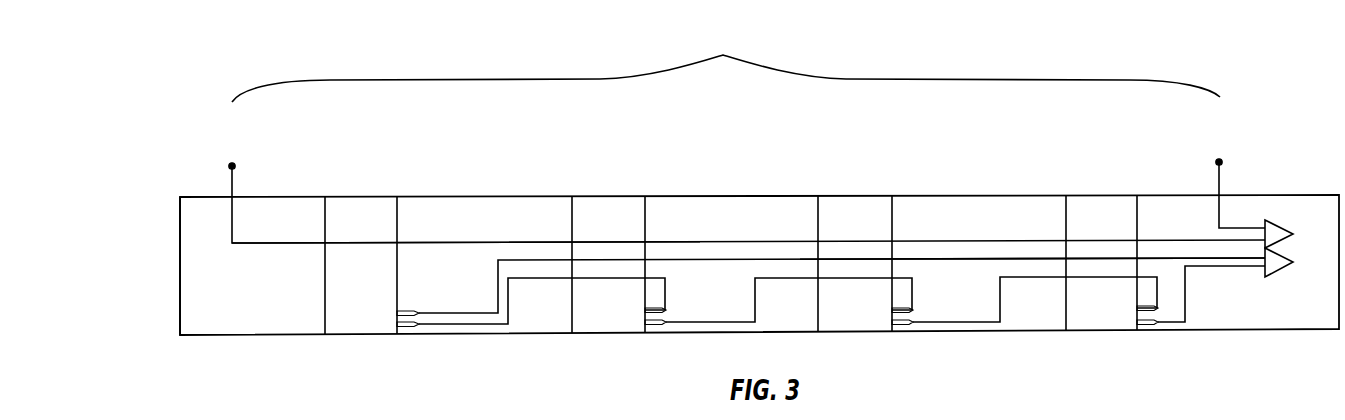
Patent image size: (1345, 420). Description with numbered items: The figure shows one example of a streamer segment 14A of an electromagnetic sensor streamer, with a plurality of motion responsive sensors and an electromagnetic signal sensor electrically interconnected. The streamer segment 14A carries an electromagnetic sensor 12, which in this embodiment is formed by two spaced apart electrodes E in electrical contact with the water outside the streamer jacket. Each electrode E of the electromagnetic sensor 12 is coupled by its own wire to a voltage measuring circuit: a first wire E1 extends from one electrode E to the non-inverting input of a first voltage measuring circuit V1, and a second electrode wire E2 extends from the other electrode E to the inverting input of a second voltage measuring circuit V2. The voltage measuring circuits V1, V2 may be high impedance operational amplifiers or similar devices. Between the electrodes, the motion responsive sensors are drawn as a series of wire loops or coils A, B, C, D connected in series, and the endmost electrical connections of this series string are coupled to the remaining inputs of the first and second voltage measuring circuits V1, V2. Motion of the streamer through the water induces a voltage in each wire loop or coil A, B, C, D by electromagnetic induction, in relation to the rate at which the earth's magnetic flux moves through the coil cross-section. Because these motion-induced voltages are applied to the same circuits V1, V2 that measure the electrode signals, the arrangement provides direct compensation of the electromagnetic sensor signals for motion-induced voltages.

The electromagnetic sensor 12 is at (726, 65).
The streamer segment 14A is at (144, 266).
The electrode E is at (745, 187).
The first wire E1 is at (462, 243).
The second electrode wire E2 is at (950, 260).
The wire loop or coil A is at (806, 247).
The wire loop or coil B is at (755, 246).
The wire loop or coil C is at (1001, 245).
The wire loop or coil D is at (1178, 246).
The first voltage measuring circuit V1 is at (1295, 234).
The second voltage measuring circuit V2 is at (1295, 262).